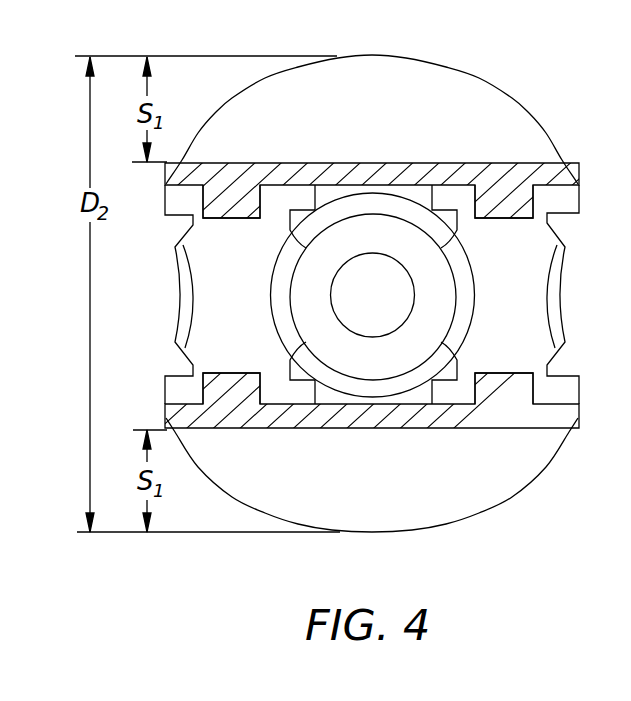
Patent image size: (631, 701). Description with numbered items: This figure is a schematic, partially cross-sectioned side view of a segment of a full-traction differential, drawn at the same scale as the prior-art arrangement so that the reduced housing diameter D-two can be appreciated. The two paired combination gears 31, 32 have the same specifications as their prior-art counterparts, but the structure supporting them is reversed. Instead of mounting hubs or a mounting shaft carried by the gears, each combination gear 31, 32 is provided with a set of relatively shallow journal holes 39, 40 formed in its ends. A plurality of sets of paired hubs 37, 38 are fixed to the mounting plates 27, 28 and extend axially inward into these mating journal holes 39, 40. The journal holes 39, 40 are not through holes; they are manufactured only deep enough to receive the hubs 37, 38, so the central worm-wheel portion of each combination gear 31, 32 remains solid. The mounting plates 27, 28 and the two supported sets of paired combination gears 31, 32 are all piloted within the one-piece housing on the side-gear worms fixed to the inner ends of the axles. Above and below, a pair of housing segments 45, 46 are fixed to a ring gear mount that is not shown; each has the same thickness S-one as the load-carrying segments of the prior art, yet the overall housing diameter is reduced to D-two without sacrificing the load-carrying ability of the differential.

The mounting plate 27 is at (230, 173).
The mounting plate 28 is at (222, 411).
The combination gear 31 is at (551, 247).
The combination gear 32 is at (245, 305).
The hub 37 is at (500, 217).
The hub 38 is at (497, 379).
The journal hole 39 is at (503, 213).
The journal hole 40 is at (530, 393).
The housing segment 45 is at (468, 93).
The housing segment 46 is at (465, 494).